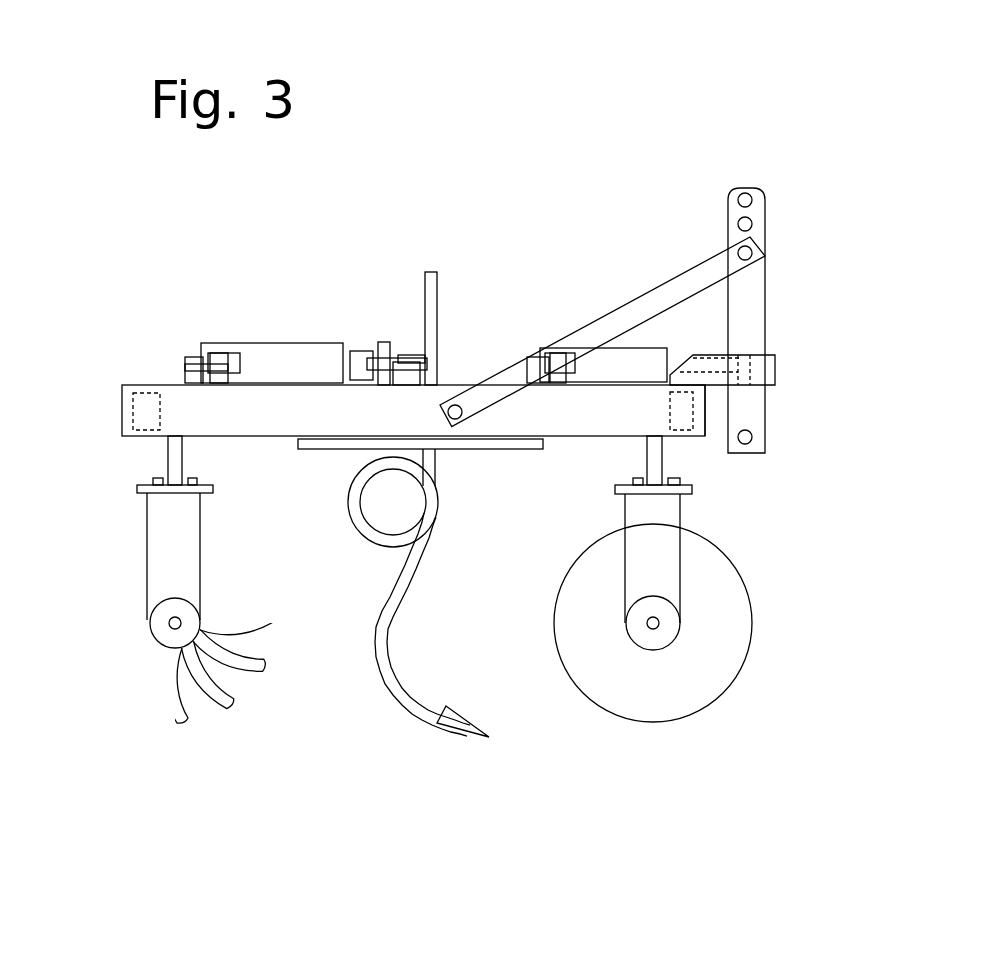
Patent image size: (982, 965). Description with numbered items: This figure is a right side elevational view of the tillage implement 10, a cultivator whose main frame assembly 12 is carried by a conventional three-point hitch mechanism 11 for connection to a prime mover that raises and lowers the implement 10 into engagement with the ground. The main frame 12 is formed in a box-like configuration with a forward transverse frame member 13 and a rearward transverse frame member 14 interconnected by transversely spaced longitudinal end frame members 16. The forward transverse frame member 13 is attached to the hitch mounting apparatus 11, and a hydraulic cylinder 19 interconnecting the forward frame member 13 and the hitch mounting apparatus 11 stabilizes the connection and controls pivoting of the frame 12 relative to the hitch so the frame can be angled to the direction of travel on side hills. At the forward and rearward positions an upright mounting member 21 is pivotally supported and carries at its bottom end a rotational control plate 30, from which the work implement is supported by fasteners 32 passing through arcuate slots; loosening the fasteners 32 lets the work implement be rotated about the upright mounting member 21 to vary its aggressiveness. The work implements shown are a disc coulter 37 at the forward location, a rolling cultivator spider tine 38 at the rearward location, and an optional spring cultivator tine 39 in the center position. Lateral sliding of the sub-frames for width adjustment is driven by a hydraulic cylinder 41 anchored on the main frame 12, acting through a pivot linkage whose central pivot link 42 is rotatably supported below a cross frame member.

The tillage implement 10 is at (456, 212).
The three-point hitch mechanism 11 is at (728, 207).
The main frame assembly 12 is at (690, 440).
The forward transverse frame member 13 is at (705, 412).
The rearward transverse frame member 14 is at (122, 415).
The longitudinal end frame member 16 is at (176, 398).
The hydraulic cylinder 19 is at (650, 345).
The upright mounting member 21 is at (182, 452).
The rotational control plate 30 is at (137, 494).
The fastener 32 is at (150, 480).
The disc coulter 37 is at (668, 720).
The rolling cultivator spider tine 38 is at (194, 718).
The spring cultivator tine 39 is at (458, 738).
The hydraulic cylinder 41 is at (262, 343).
The central pivot link 42 is at (452, 450).